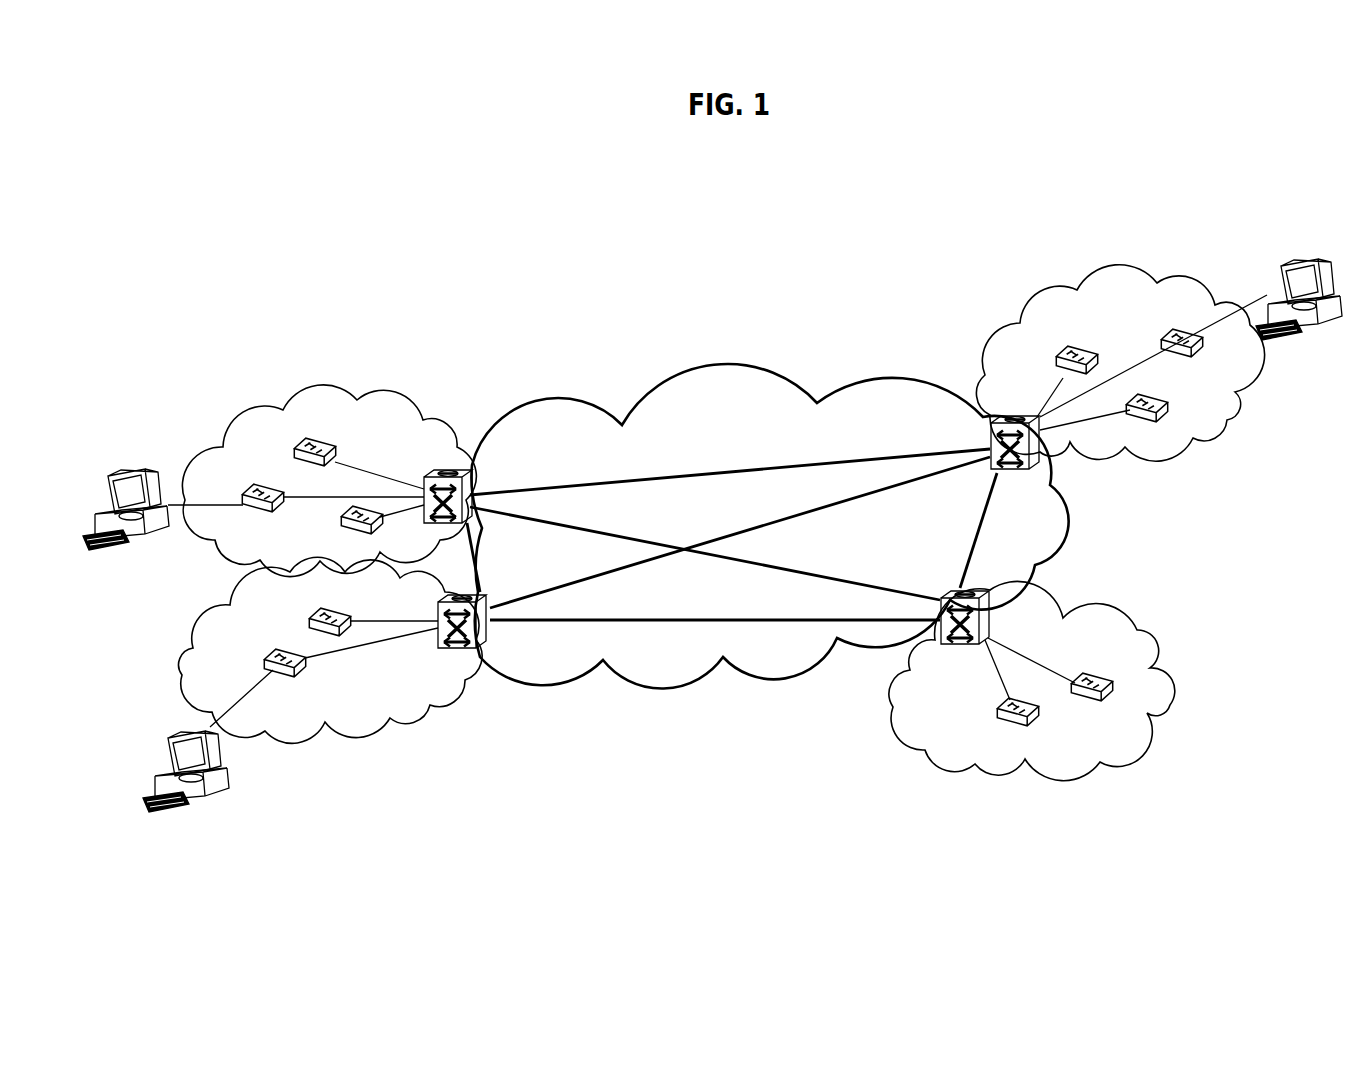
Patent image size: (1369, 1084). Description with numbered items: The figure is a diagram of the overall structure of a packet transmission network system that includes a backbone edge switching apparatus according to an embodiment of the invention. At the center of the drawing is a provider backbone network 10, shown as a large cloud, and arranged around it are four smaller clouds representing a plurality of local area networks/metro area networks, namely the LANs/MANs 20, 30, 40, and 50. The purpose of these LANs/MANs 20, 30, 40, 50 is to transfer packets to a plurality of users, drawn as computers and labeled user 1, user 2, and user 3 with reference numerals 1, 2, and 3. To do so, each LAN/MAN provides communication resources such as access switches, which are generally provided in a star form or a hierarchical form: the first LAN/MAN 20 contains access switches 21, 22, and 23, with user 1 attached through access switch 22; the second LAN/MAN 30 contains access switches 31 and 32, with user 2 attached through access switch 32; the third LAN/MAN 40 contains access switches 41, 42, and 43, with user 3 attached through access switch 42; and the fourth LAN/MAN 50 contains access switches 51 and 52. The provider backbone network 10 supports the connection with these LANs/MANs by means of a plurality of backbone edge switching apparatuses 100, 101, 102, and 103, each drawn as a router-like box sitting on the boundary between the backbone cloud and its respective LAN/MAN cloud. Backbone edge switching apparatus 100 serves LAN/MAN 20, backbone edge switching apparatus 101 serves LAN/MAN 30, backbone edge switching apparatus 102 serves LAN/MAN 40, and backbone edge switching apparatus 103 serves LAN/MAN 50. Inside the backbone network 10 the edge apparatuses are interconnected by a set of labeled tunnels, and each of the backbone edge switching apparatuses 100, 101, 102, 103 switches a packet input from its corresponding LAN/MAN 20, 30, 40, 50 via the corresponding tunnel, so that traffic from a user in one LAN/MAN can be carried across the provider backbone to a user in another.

The user 1 is at (150, 540).
The user 2 is at (206, 802).
The user 3 is at (1320, 338).
The provider backbone network 10 is at (716, 362).
The local area network/metro area network 20 is at (322, 385).
The access switch 21 is at (297, 450).
The access switch 22 is at (212, 538).
The access switch 23 is at (343, 520).
The local area network/metro area network 30 is at (397, 722).
The access switch 31 is at (308, 622).
The access switch 32 is at (292, 727).
The local area network/metro area network 40 is at (1108, 270).
The access switch 41 is at (1018, 324).
The access switch 42 is at (1232, 415).
The access switch 43 is at (1193, 440).
The local area network/metro area network 50 is at (1142, 630).
The access switch 51 is at (997, 705).
The access switch 52 is at (1168, 705).
The backbone edge switching apparatus 100 is at (492, 468).
The backbone edge switching apparatus 101 is at (480, 690).
The backbone edge switching apparatus 102 is at (1042, 450).
The backbone edge switching apparatus 103 is at (1037, 590).